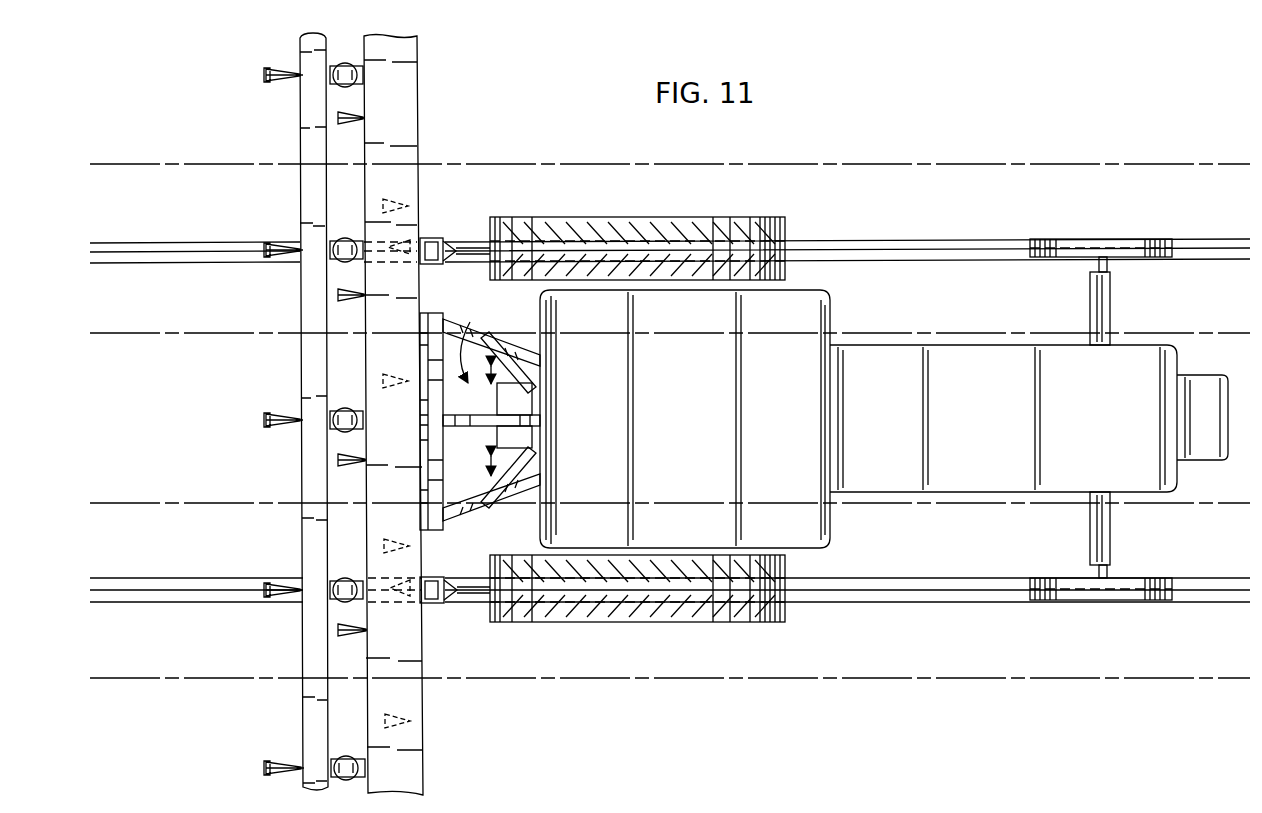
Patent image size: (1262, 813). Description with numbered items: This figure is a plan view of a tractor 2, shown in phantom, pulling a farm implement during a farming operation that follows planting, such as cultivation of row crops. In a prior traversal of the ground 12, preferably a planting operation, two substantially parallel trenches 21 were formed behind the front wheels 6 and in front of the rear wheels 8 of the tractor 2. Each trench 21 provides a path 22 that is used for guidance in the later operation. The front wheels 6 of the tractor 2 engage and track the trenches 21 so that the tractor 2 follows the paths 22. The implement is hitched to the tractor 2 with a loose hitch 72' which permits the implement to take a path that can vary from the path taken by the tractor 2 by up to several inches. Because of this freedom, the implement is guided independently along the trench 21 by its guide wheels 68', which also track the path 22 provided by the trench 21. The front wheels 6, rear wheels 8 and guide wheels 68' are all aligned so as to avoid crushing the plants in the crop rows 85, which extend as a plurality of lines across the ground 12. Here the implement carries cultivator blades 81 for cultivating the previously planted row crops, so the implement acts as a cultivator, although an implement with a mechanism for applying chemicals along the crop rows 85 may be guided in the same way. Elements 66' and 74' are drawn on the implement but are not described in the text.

The tractor 2 is at (701, 418).
The front wheels 6 is at (1075, 240).
The rear wheels 8 is at (648, 217).
The ground 12 is at (882, 650).
The trench 21 is at (203, 268).
The path 22 is at (130, 266).
The coupling arm 66' is at (487, 420).
The implement guide wheel 68' is at (467, 423).
The loose hitch 72' is at (480, 415).
The bolt 74' is at (347, 409).
The cultivator blades 81 is at (290, 70).
The crop rows 85 is at (196, 166).